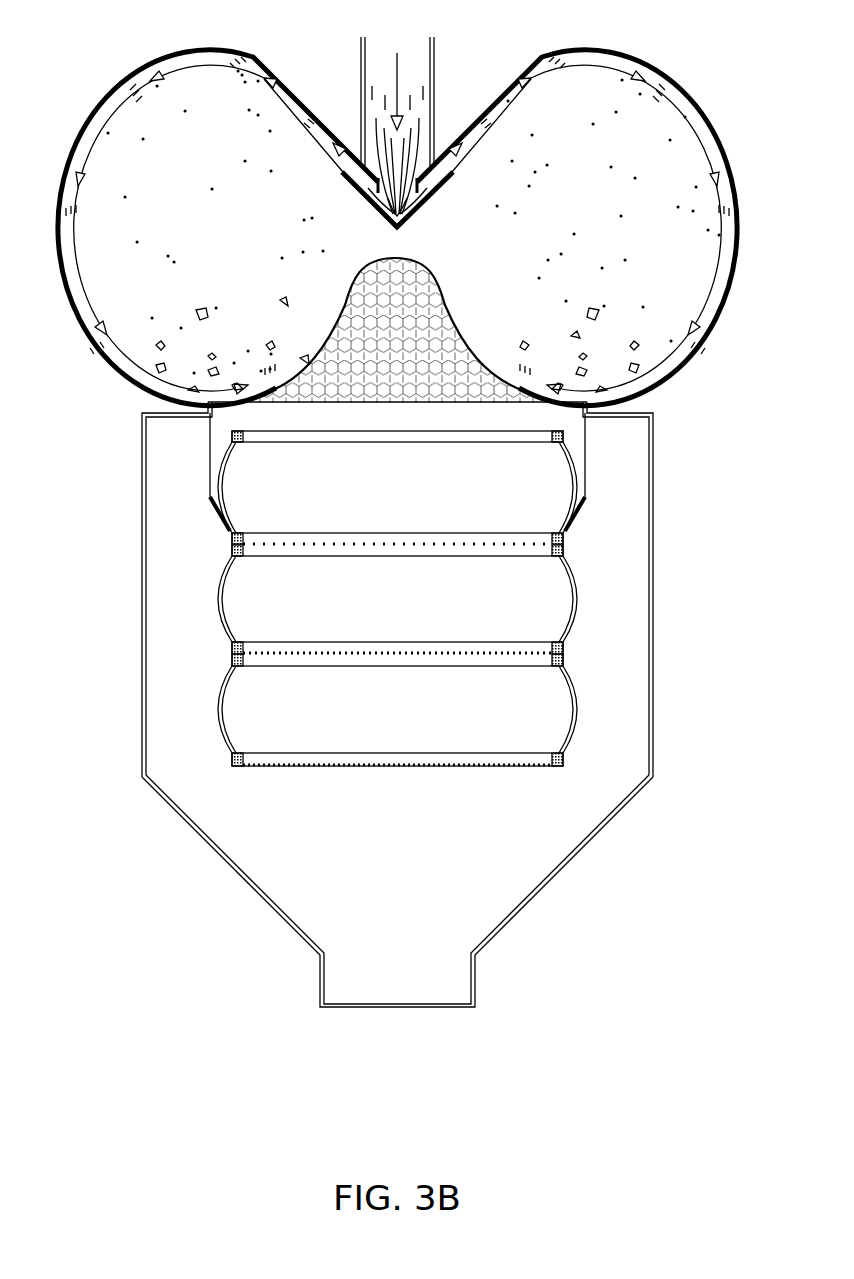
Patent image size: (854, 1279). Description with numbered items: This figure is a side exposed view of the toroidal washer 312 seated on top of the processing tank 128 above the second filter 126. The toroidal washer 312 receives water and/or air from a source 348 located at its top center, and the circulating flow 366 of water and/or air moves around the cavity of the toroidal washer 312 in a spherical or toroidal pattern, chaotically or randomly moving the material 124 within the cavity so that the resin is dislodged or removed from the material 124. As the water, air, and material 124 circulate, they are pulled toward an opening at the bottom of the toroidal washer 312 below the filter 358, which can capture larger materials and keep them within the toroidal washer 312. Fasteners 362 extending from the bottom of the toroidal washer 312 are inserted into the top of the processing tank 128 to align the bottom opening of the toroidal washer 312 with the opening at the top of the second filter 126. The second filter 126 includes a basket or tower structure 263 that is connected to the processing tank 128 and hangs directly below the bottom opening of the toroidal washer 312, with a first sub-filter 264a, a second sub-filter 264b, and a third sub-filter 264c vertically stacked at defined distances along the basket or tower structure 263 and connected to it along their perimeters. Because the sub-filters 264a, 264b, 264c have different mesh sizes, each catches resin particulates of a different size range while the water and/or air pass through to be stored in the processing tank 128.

The toroidal washer 312 is at (203, 45).
The source 348 is at (410, 67).
The gas flow path 366 is at (636, 91).
The material 124 is at (196, 308).
The filter 358 is at (422, 299).
The fasteners 362 is at (594, 484).
The basket or tower structure 263 is at (193, 425).
The first sub-filter 264a is at (398, 550).
The second sub-filter 264b is at (398, 661).
The third sub-filter 264c is at (398, 772).
The processing tank 128 is at (139, 780).
The second filter 126 is at (577, 783).